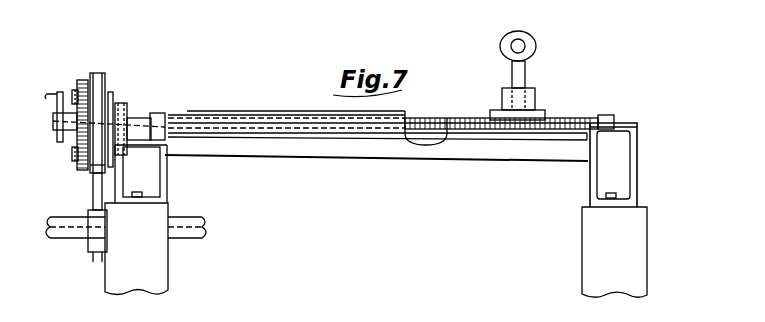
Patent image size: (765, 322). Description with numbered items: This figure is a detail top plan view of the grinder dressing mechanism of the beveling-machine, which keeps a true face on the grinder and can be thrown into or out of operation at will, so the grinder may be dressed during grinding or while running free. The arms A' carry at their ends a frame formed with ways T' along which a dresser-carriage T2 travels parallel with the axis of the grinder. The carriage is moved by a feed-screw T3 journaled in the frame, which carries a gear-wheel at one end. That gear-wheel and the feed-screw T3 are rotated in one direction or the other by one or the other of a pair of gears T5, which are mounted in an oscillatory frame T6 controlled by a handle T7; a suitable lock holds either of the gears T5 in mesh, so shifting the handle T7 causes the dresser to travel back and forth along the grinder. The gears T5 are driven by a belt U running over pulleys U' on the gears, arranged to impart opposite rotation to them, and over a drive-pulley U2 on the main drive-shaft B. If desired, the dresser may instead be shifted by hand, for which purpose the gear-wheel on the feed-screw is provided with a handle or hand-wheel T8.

The ways T' is at (389, 135).
The dresser-carriage T2 is at (535, 93).
The feed-screw T3 is at (437, 111).
The pair of gears T5 is at (82, 80).
The oscillatory frame T6 is at (115, 92).
The handle T7 is at (128, 117).
The handle or hand-wheel T8 is at (53, 93).
The belt U is at (84, 185).
The pulleys U' is at (104, 124).
The drive-pulley U2 is at (88, 245).
The arms A' is at (376, 210).
The main drive-shaft B is at (126, 243).